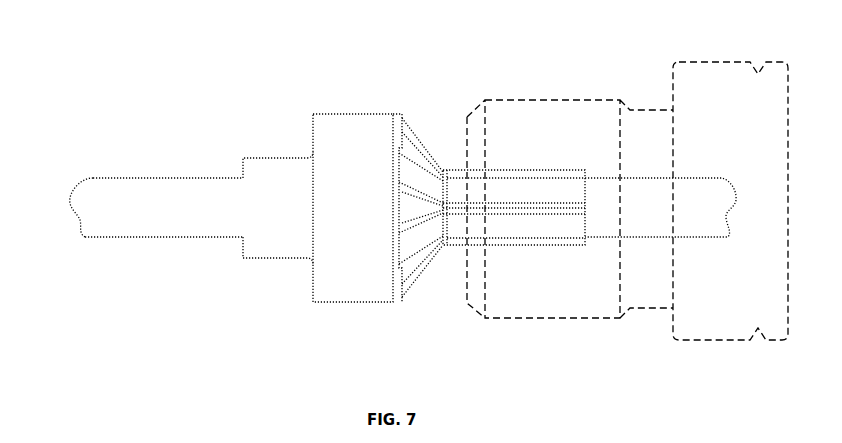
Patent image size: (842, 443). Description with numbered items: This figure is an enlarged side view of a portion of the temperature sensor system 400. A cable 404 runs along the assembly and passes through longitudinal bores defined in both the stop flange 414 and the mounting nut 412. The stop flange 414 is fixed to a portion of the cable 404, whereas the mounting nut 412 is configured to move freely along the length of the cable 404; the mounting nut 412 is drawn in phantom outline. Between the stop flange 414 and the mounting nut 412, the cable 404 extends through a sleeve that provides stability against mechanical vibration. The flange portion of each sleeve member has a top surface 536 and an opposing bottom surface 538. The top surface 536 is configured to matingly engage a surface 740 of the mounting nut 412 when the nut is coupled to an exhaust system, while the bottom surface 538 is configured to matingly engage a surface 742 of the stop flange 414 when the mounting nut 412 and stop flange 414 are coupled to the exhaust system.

The temperature sensor system 400 is at (112, 85).
The cable 404 is at (160, 227).
The mounting nut 412 is at (510, 177).
The stop flange 414 is at (335, 290).
The top surface 536 is at (408, 120).
The bottom surface 538 is at (393, 292).
The surface of the mounting nut 740 is at (465, 138).
The surface of the stop flange 742 is at (395, 270).